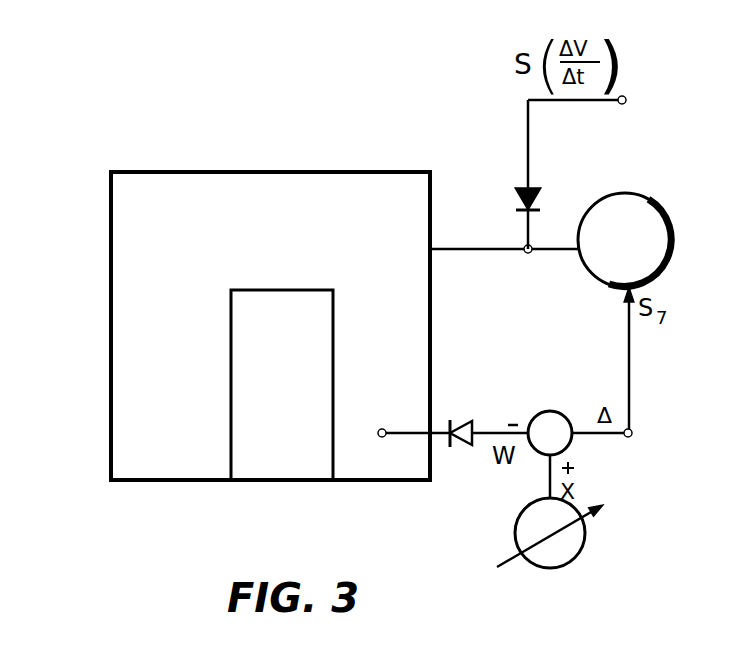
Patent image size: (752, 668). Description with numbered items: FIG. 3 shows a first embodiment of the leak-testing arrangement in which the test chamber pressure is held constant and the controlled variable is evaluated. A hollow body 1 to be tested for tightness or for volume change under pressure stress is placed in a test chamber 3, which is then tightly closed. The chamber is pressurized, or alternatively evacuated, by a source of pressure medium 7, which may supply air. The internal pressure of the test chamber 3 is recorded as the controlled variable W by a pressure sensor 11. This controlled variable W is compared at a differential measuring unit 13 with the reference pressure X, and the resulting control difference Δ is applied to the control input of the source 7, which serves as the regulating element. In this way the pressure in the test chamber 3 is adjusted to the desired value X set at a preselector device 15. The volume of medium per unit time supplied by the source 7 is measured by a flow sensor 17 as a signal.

The hollow body 1 is at (231, 396).
The test chamber 3 is at (111, 268).
The source of pressure medium 7 is at (667, 218).
The pressure sensor 11 is at (462, 425).
The differential measuring unit 13 is at (555, 412).
The preselector device 15 is at (583, 555).
The flow sensor 17 is at (543, 191).